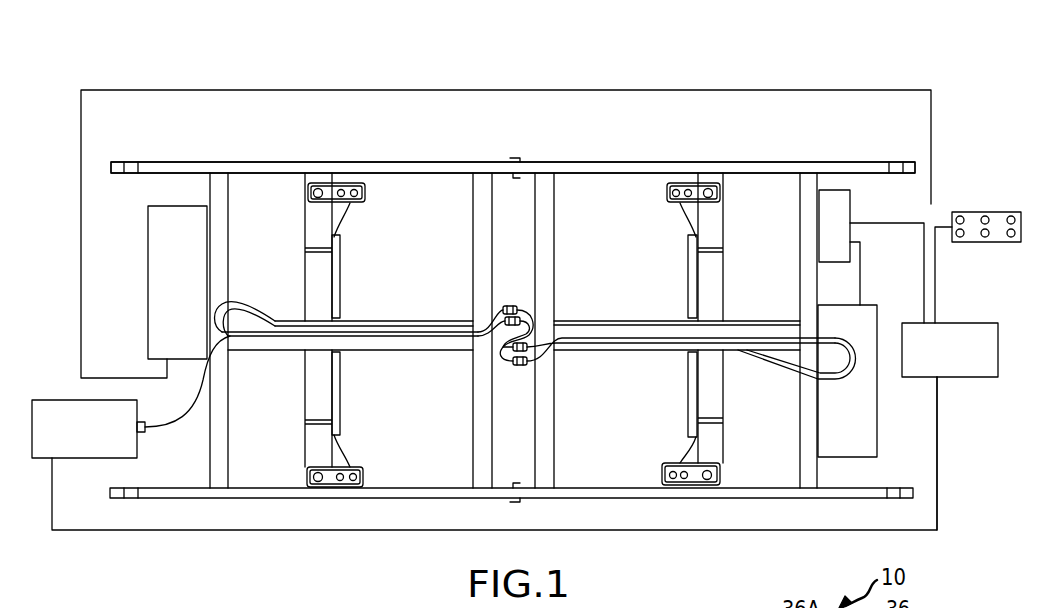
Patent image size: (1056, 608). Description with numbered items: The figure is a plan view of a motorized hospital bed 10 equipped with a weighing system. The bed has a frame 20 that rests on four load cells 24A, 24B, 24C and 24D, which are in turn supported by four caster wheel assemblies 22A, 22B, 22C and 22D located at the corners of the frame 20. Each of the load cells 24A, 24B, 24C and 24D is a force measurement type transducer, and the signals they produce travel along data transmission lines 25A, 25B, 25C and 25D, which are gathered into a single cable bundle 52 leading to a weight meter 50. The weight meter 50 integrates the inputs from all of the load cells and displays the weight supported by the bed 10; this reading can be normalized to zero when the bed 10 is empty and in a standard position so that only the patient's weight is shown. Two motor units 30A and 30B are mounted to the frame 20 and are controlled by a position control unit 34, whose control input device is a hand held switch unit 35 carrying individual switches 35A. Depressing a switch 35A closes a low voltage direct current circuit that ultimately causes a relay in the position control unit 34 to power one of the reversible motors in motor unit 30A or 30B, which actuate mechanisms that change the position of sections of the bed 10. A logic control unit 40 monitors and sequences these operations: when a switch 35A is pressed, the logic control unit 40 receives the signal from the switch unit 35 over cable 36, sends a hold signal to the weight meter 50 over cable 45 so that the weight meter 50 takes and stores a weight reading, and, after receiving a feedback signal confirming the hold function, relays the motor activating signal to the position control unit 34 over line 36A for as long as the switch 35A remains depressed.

The motorized hospital bed 10 is at (980, 125).
The frame 20 is at (306, 162).
The caster wheel assembly 22A is at (365, 476).
The caster wheel assembly 22B is at (720, 476).
The caster wheel assembly 22C is at (667, 193).
The caster wheel assembly 22D is at (366, 193).
The load cell 24A is at (318, 462).
The load cell 24B is at (713, 463).
The load cell 24C is at (710, 203).
The load cell 24D is at (320, 203).
The data transmission line 25A is at (342, 452).
The data transmission line 25B is at (688, 455).
The data transmission line 25C is at (689, 237).
The data transmission line 25D is at (341, 232).
The motor unit 30A is at (864, 418).
The motor unit 30B is at (201, 281).
The position control unit 34 is at (848, 235).
The hand held switch unit 35 is at (970, 243).
The switch 35A is at (1011, 215).
The cable 36 is at (936, 300).
The line 36A is at (924, 280).
The logic control unit 40 is at (962, 361).
The cable 45 is at (938, 462).
The weight meter 50 is at (96, 438).
The single cable bundle 52 is at (145, 429).